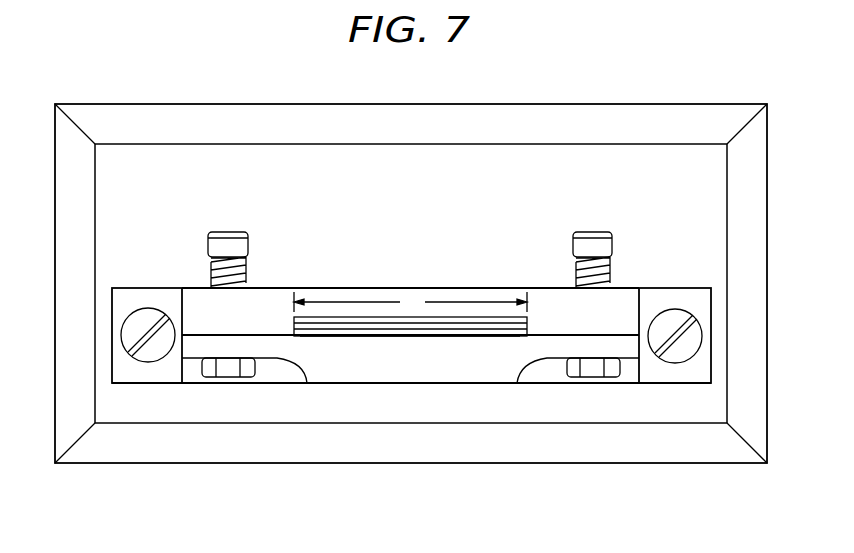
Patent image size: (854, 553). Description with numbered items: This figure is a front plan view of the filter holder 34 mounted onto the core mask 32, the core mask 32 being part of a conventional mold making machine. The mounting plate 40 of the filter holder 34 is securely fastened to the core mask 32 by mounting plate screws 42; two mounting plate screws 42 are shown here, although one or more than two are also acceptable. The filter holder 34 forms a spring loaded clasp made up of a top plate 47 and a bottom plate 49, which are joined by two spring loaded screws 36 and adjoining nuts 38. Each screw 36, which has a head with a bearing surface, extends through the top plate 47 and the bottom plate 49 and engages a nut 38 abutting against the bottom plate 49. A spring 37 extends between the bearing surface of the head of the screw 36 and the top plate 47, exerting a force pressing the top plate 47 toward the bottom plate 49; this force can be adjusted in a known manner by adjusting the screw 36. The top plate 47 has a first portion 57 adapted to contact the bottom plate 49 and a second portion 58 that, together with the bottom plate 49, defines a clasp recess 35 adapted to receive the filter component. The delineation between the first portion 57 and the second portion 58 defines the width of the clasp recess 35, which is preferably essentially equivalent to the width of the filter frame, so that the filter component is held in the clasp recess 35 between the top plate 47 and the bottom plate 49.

The core mask 32 is at (140, 174).
The filter holder 34 is at (428, 290).
The clasp recess 35 is at (372, 340).
The screw 36 is at (613, 236).
The spring 37 is at (612, 273).
The nut 38 is at (608, 381).
The mounting plate 40 is at (130, 299).
The mounting screw 42 is at (703, 336).
The top plate 47 is at (480, 290).
The bottom plate 49 is at (472, 381).
The first portion 57 is at (270, 298).
The second portion 58 is at (363, 290).